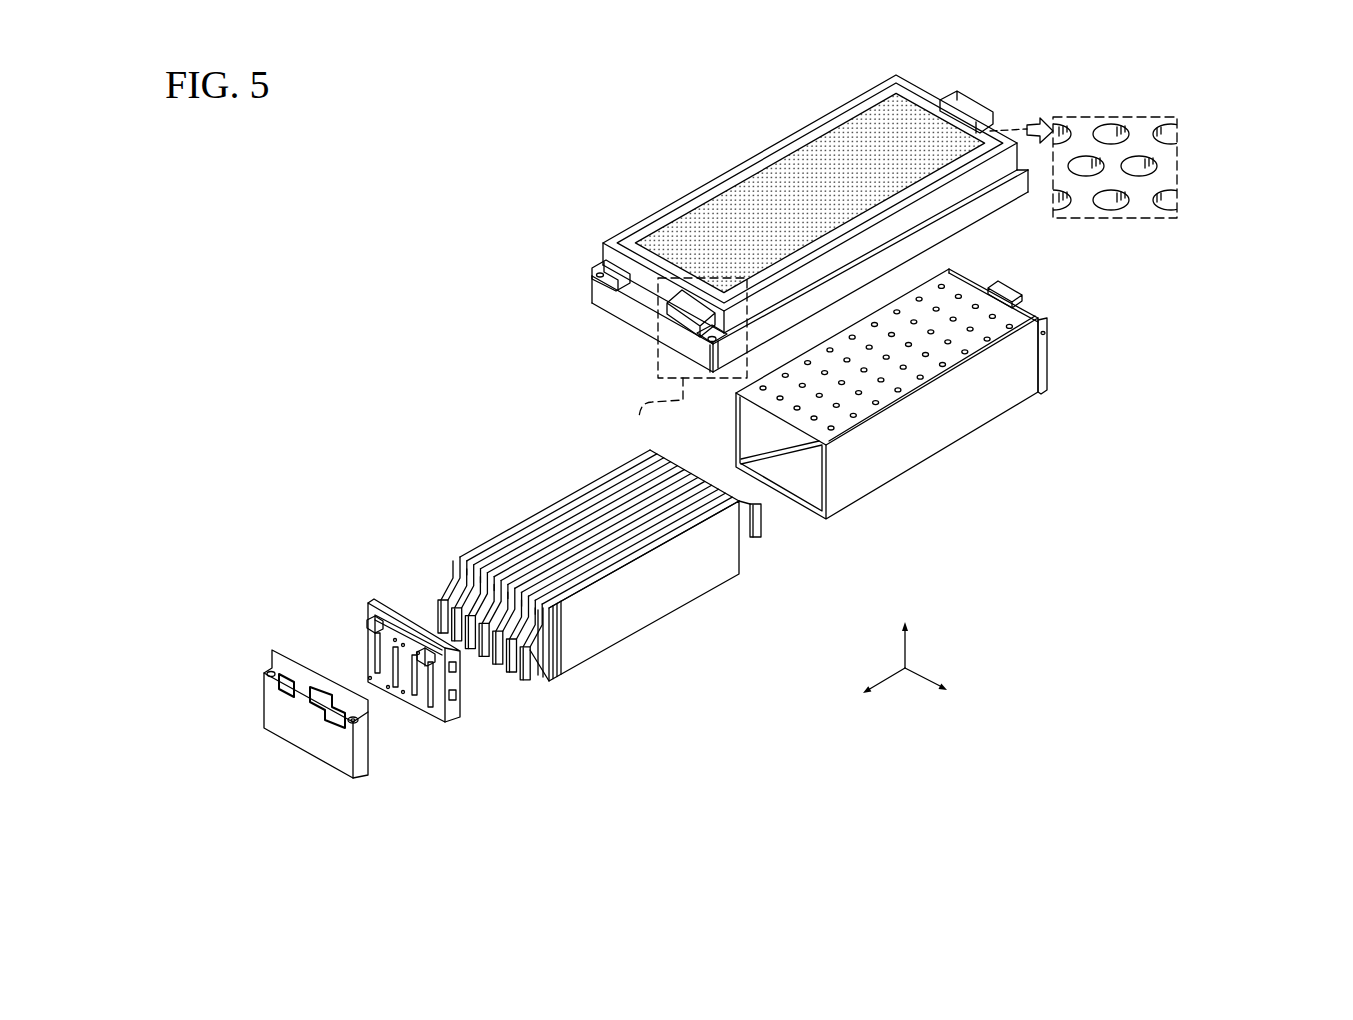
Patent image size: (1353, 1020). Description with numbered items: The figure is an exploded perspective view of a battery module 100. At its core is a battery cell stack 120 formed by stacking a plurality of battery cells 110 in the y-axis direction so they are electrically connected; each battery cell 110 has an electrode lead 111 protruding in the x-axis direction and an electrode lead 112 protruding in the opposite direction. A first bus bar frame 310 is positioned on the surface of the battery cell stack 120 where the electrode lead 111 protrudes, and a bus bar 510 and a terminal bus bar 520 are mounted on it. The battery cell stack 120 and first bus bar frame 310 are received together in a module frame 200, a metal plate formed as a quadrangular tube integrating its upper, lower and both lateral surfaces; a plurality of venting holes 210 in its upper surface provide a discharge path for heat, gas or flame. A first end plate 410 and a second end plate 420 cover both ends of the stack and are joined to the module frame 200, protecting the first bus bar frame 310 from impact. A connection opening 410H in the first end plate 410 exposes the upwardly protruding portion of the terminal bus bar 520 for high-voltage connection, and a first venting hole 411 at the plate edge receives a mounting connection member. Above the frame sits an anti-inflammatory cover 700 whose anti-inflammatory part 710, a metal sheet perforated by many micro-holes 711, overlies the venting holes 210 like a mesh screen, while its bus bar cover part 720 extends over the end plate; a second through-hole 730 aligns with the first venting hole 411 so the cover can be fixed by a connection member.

The battery module 100 is at (349, 348).
The battery cell 110 is at (653, 600).
The electrode lead 111 is at (437, 599).
The electrode lead 112 is at (757, 537).
The battery cell stack 120 is at (566, 693).
The module frame 200 is at (888, 462).
The venting hole 210 is at (1012, 323).
The first bus bar frame 310 is at (398, 612).
The first end plate 410 is at (293, 738).
The connection opening 410H is at (332, 700).
The first venting hole 411 is at (362, 719).
The second end plate 420 is at (1005, 293).
The bus bar 510 is at (410, 690).
The terminal bus bar 520 is at (370, 627).
The anti-inflammatory cover 700 is at (572, 244).
The anti-inflammatory part 710 is at (700, 207).
The micro-hole 711 is at (1150, 163).
The bus bar cover part 720 is at (613, 287).
The second through-hole 730 is at (710, 340).